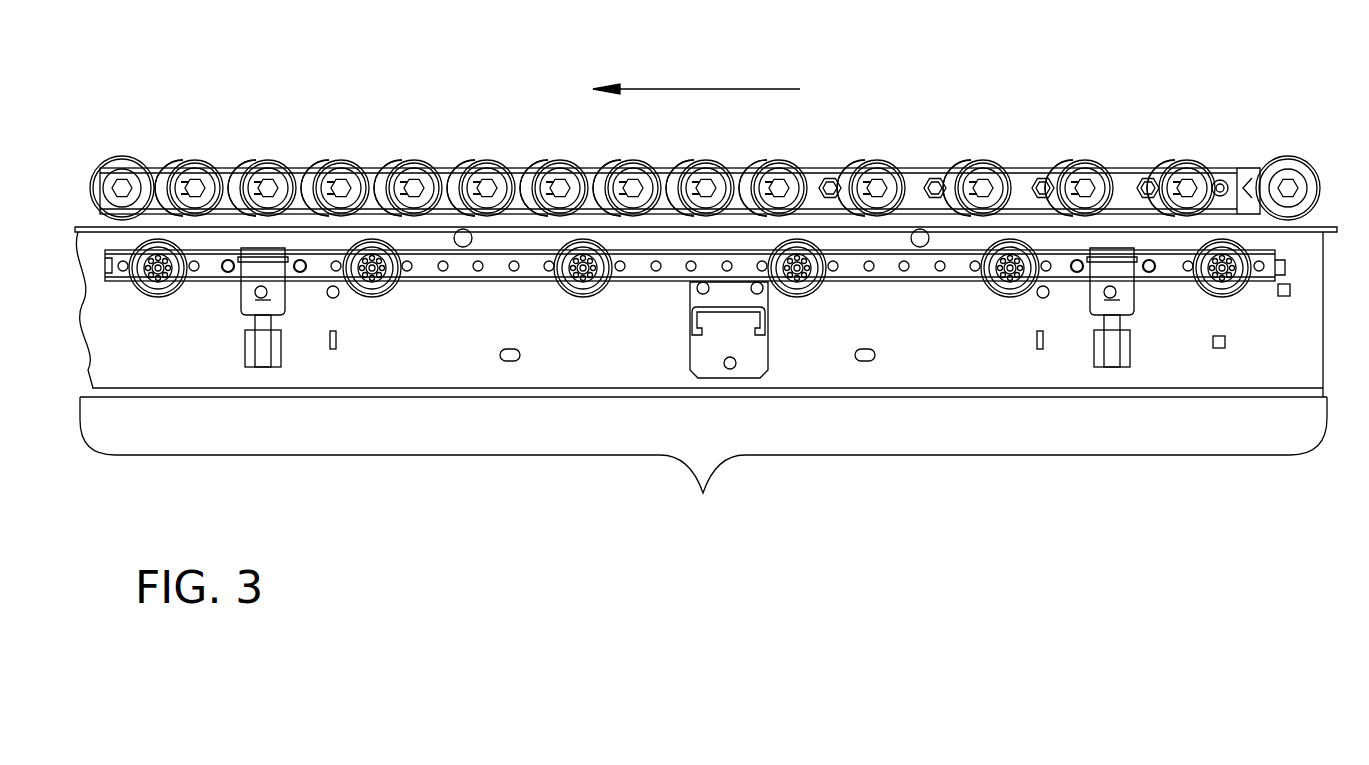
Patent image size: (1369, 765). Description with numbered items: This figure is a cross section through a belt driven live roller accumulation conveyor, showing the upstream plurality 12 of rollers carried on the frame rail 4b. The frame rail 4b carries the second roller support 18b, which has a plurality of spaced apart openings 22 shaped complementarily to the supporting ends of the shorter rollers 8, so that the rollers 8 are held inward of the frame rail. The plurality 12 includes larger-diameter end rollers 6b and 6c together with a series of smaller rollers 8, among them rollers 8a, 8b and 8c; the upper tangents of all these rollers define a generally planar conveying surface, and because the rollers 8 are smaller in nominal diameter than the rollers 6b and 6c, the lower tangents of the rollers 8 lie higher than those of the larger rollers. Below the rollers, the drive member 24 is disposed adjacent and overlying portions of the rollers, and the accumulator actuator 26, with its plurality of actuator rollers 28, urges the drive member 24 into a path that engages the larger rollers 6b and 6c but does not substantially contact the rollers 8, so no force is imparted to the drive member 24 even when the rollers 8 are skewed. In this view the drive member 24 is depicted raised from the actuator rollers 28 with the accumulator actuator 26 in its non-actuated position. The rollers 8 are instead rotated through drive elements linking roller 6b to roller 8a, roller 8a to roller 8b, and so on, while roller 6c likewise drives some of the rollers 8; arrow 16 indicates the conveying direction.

The frame rail 4b is at (1075, 368).
The roller 6b is at (1292, 158).
The roller 6c is at (121, 157).
The roller 8 is at (198, 160).
The roller 8a is at (1190, 160).
The roller 8b is at (1087, 160).
The roller 8c is at (985, 160).
The upstream plurality 12 is at (702, 491).
The conveying direction 16 is at (723, 89).
The second roller support 18b is at (380, 170).
The opening 22 is at (936, 177).
The drive member 24 is at (90, 250).
The accumulator actuator 26 is at (455, 284).
The actuator roller 28 is at (158, 298).